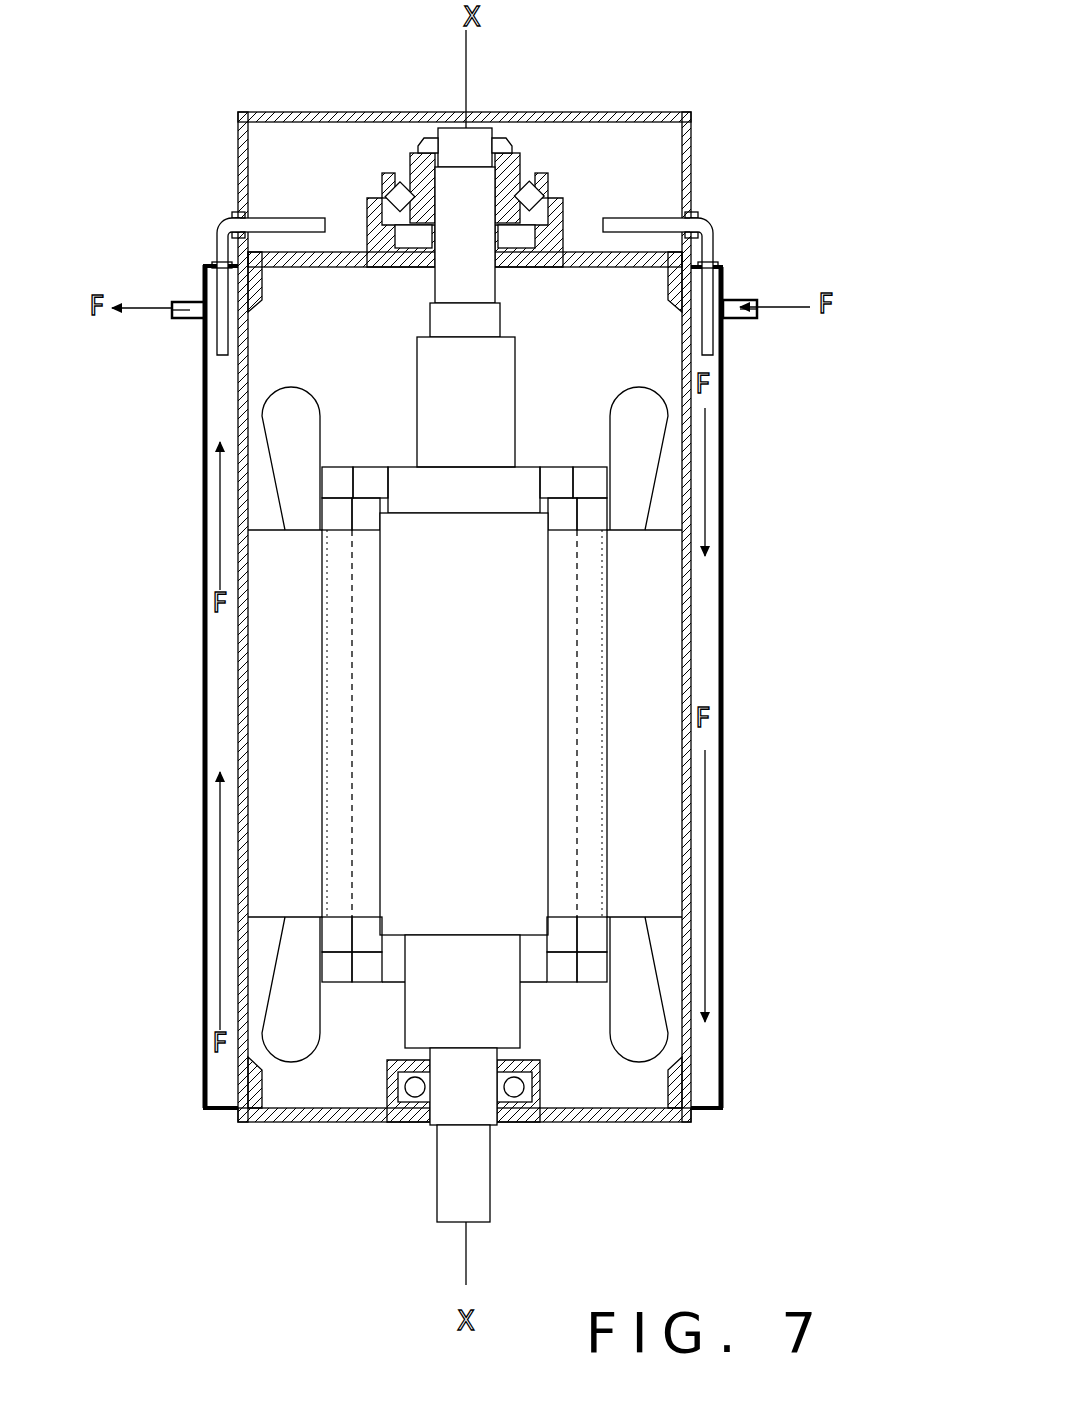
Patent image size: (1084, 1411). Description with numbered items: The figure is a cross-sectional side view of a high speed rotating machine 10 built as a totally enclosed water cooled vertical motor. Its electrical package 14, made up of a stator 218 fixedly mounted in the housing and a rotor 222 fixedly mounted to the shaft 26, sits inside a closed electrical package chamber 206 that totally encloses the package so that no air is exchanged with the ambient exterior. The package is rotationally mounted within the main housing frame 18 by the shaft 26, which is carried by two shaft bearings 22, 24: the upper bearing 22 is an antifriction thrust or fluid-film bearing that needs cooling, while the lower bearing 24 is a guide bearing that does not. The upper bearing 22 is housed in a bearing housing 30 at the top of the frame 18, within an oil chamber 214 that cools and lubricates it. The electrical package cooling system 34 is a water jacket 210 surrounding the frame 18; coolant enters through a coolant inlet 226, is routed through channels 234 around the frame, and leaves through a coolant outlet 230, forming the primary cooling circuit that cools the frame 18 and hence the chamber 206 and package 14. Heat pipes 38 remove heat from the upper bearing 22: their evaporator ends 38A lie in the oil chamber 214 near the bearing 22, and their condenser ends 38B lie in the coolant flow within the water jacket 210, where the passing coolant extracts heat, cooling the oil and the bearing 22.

The high speed rotating machine 10 is at (523, 620).
The electrical package 14 is at (452, 680).
The main housing frame 18 is at (690, 590).
The upper shaft bearing 22 is at (531, 205).
The lower guide bearing 24 is at (522, 1122).
The shaft 26 is at (464, 630).
The bearing housing 30 is at (511, 150).
The electrical package cooling system 34 is at (745, 496).
The heat pipes 38 is at (467, 203).
The evaporator ends 38A is at (300, 216).
The condenser ends 38B is at (216, 340).
The electrical package chamber 206 is at (277, 374).
The water jacket 210 is at (473, 686).
The oil chamber 214 is at (643, 162).
The stator 218 is at (653, 793).
The rotor 222 is at (588, 882).
The coolant inlet 226 is at (735, 298).
The coolant outlet 230 is at (183, 301).
The channels 234 is at (705, 1062).